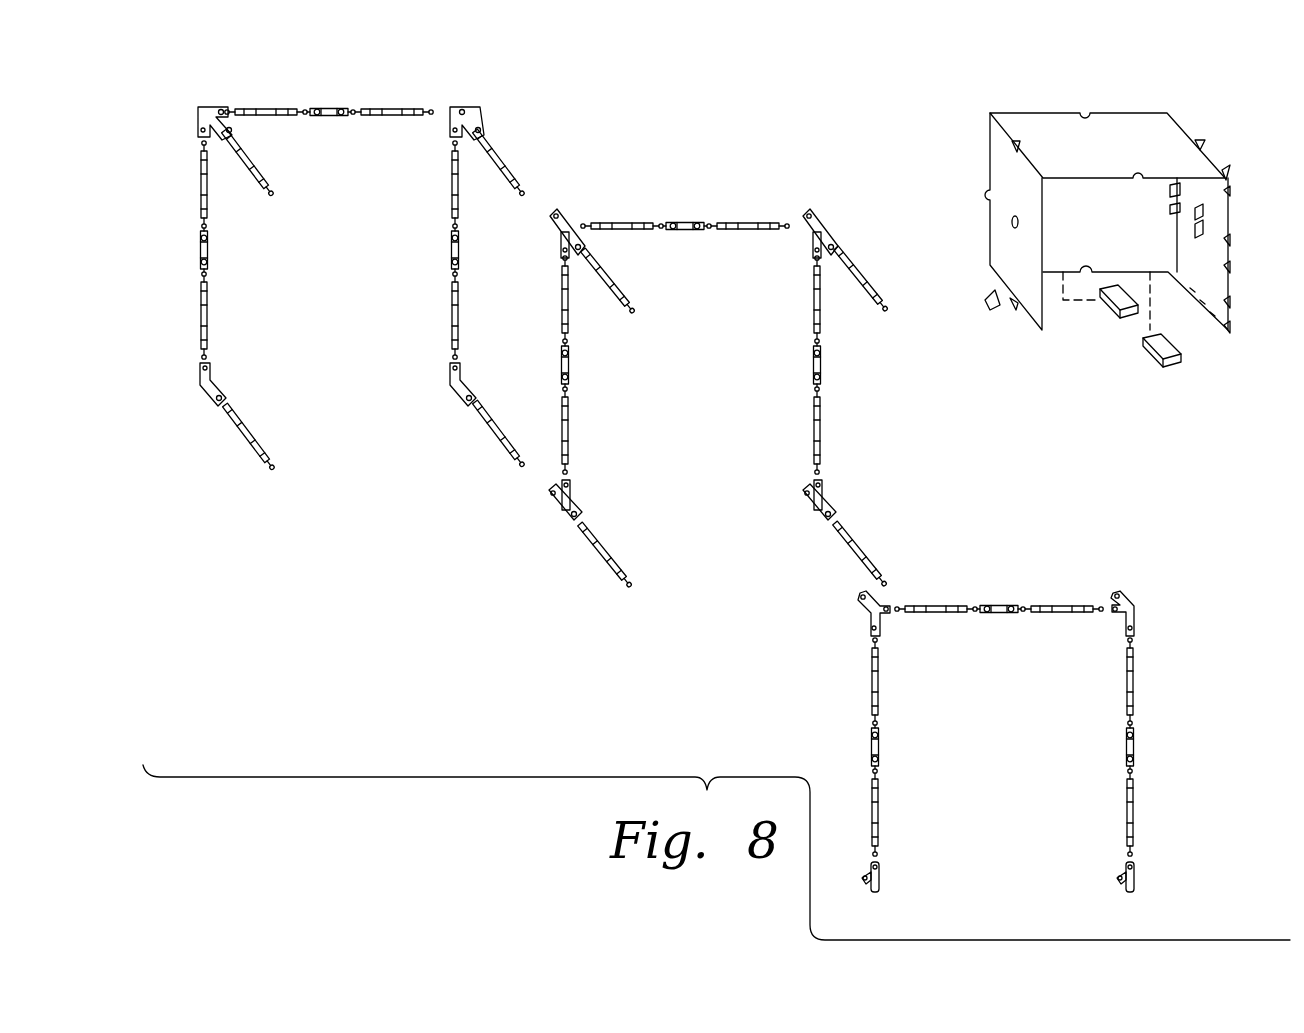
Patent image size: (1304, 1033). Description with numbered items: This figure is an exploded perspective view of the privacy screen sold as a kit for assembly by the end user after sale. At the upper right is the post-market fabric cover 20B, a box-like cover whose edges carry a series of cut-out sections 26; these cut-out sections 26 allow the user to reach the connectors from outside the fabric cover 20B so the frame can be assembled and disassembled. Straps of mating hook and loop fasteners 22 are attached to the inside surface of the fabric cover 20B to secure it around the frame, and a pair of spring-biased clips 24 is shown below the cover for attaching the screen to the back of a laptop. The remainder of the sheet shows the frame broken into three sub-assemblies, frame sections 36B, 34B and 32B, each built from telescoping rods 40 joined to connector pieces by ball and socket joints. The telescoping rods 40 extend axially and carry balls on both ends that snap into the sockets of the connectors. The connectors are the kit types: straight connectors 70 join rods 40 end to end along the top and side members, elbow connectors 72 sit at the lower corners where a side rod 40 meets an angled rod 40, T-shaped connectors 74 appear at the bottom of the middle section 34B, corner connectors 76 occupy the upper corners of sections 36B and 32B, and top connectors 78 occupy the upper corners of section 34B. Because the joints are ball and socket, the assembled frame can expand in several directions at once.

The fabric cover 20B is at (1218, 283).
The hook and loop fasteners 22 is at (1229, 268).
The spring-biased clips 24 is at (1148, 350).
The cut-out sections 26 is at (985, 113).
The frame section 32B is at (1012, 815).
The frame section 34B is at (713, 497).
The frame section 36B is at (372, 452).
The telescoping rods 40 is at (505, 165).
The straight connector 70 is at (327, 108).
The elbow connector 72 is at (203, 388).
The T-shaped connector 74 is at (563, 512).
The corner connector 76 is at (203, 106).
The top connector 78 is at (560, 212).